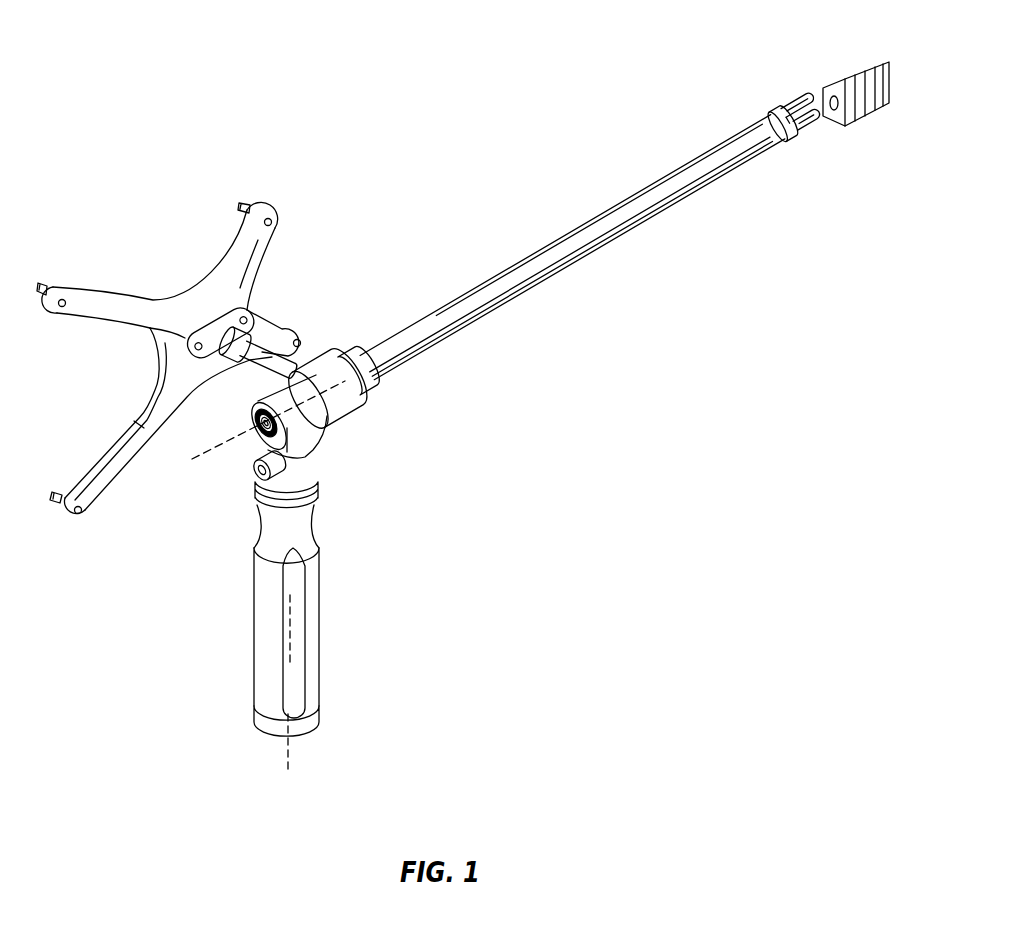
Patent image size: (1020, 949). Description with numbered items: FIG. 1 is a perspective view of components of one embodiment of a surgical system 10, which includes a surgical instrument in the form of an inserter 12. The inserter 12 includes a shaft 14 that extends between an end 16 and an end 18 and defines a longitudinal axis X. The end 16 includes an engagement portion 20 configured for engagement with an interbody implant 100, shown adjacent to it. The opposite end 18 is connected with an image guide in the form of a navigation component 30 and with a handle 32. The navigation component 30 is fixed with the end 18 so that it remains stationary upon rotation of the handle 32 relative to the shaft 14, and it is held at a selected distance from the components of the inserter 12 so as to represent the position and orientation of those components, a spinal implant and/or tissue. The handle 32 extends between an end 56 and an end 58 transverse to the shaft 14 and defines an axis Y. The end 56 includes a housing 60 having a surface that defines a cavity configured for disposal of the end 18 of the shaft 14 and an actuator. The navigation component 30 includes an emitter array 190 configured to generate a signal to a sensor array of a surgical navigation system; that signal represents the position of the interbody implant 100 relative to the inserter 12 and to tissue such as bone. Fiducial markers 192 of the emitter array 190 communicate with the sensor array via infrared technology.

The surgical system 10 is at (213, 28).
The inserter 12 is at (131, 156).
The shaft 14 is at (521, 212).
The end 16 is at (787, 138).
The end 18 is at (326, 414).
The engagement portion 20 is at (800, 82).
The navigation component 30 is at (217, 207).
The handle 32 is at (237, 667).
The end 56 is at (256, 413).
The end 58 is at (312, 718).
The housing 60 is at (308, 443).
The interbody implant 100 is at (838, 56).
The emitter array 190 is at (110, 232).
The fiducial markers 192 is at (245, 205).